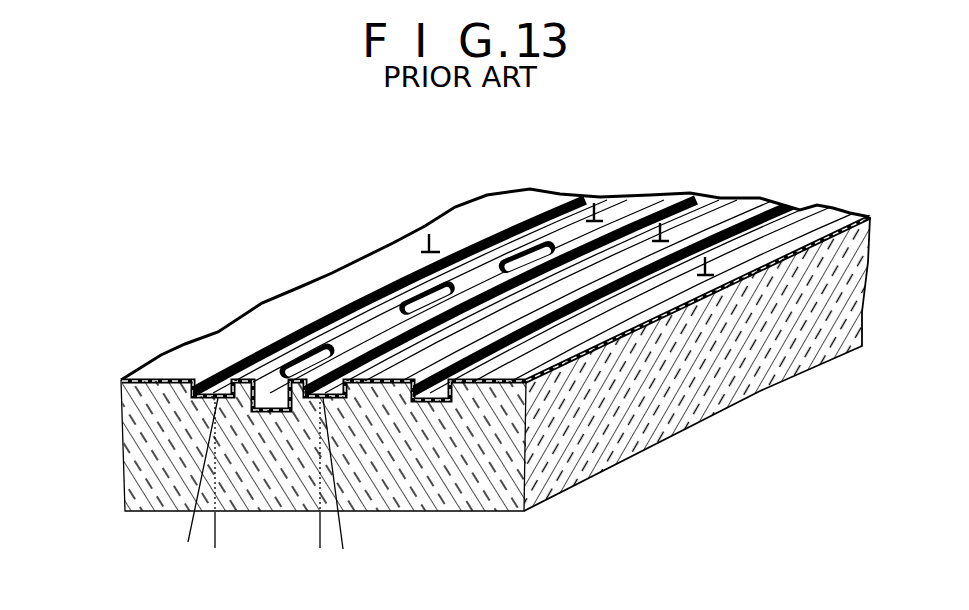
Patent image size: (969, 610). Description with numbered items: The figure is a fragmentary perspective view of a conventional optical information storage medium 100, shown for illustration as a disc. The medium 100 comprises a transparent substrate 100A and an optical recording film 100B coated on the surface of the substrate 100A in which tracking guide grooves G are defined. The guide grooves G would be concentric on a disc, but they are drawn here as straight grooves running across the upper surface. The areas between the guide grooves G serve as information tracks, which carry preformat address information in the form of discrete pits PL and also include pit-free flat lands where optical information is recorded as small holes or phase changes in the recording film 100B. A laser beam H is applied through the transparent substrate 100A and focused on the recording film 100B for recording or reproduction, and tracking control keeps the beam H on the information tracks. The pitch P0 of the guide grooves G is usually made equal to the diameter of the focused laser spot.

The optical information storage medium 100 is at (259, 246).
The transparent substrate 100A is at (124, 449).
The optical recording film 100B is at (648, 318).
The tracking guide grooves G is at (595, 190).
The pits PL is at (290, 363).
The laser beam H is at (186, 549).
The pitch of the tracking guide grooves P0 is at (216, 537).